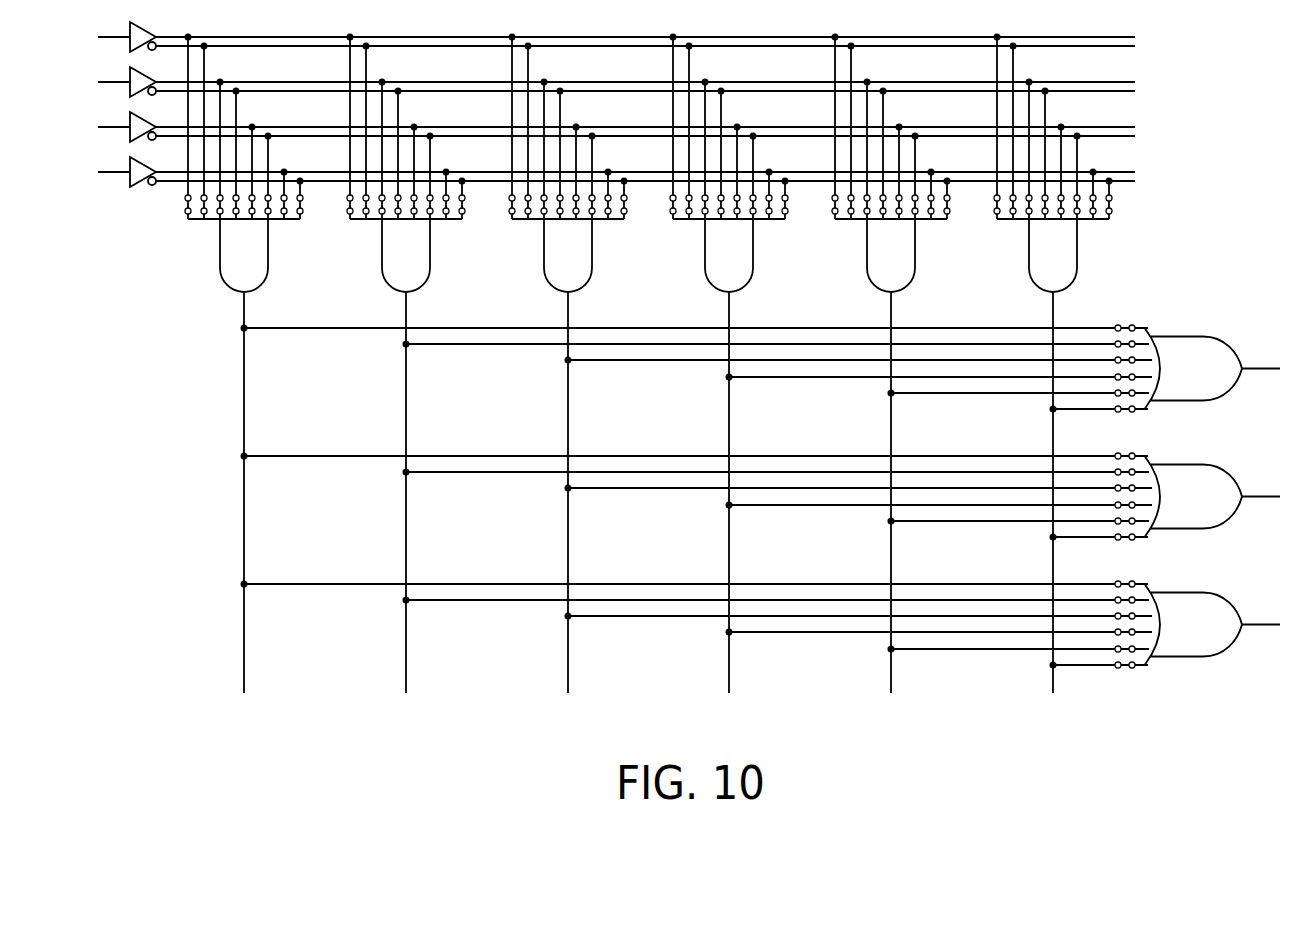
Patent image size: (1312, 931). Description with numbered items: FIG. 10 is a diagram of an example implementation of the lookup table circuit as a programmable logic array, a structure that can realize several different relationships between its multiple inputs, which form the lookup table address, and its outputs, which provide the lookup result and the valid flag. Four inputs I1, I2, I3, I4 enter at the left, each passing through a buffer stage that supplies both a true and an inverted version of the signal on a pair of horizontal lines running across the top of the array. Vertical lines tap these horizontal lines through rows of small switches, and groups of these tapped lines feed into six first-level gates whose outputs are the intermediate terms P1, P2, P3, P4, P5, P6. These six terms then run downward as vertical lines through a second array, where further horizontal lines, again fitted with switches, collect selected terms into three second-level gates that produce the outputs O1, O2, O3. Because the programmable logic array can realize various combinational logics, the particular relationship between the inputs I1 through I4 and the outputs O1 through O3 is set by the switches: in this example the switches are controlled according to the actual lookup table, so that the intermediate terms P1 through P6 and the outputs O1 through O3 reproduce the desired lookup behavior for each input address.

The input I1 with buffer/inverter I1 is at (604, 37).
The input I2 with buffer/inverter I2 is at (604, 82).
The input I3 with buffer/inverter I3 is at (604, 127).
The input I4 with buffer/inverter I4 is at (604, 172).
The product term AND gate P1 is at (244, 364).
The product term AND gate P2 is at (406, 364).
The product term AND gate P3 is at (568, 364).
The product term AND gate P4 is at (729, 364).
The product term AND gate P5 is at (891, 364).
The product term AND gate P6 is at (1053, 364).
The output OR gate O1 is at (777, 369).
The output OR gate O2 is at (777, 497).
The output OR gate O3 is at (777, 625).